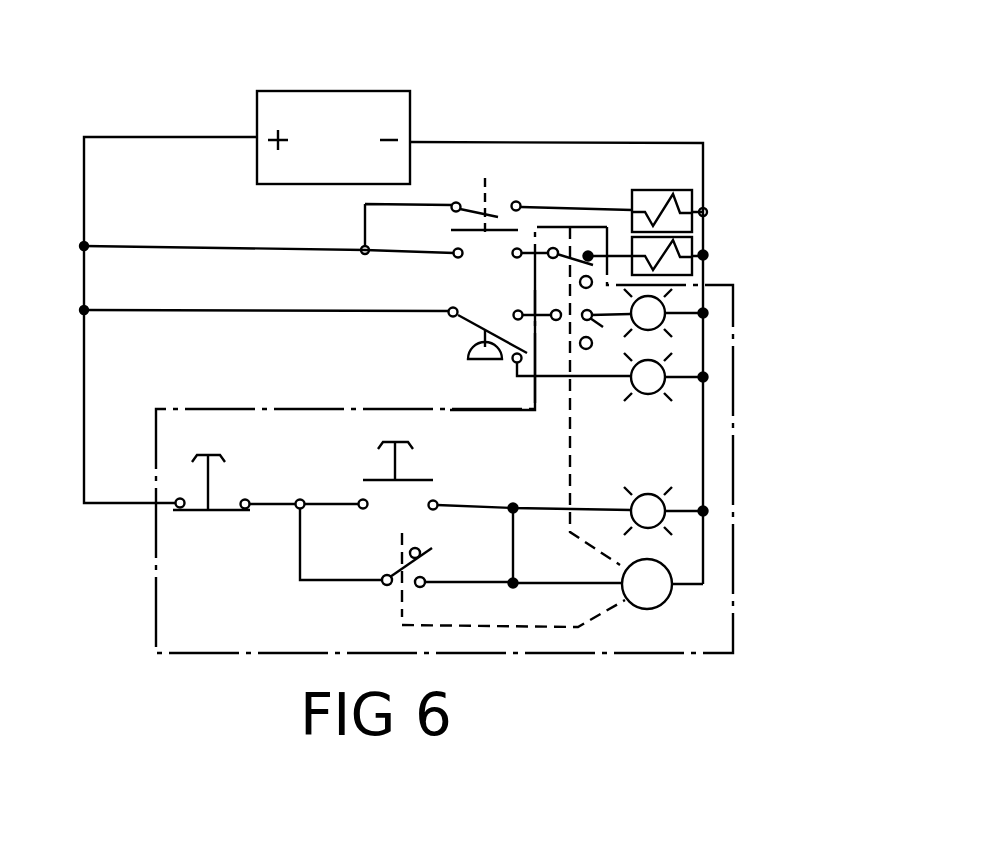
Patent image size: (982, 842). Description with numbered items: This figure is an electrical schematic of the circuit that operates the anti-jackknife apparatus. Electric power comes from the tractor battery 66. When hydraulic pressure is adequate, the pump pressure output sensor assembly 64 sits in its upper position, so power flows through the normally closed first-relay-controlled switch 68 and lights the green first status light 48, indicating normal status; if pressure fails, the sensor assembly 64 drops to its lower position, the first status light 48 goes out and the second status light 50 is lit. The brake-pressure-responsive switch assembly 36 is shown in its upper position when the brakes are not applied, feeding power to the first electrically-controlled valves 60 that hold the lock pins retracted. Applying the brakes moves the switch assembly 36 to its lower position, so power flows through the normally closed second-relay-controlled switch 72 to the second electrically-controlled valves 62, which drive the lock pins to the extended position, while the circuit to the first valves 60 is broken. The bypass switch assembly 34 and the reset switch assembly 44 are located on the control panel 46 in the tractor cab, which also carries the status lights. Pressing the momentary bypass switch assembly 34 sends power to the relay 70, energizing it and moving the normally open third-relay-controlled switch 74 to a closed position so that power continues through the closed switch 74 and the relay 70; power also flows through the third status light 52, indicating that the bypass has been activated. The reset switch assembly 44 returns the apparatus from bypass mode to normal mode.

The tractor battery 66 is at (393, 110).
The brake-pressure-responsive switch assembly 36 is at (504, 184).
The first electrically-controlled valves 60 is at (657, 188).
The second electrically-controlled valves 62 is at (693, 248).
The control panel 46 is at (731, 287).
The second-relay-controlled switch 72 is at (558, 268).
The first-relay-controlled switch 68 is at (594, 358).
The pump pressure output sensor assembly 64 is at (463, 335).
The first status light 48 is at (657, 313).
The second status light 50 is at (653, 378).
The third status light 52 is at (653, 495).
The relay 70 is at (663, 592).
The reset switch assembly 44 is at (198, 445).
The bypass switch assembly 34 is at (350, 478).
The third-relay-controlled switch 74 is at (387, 593).